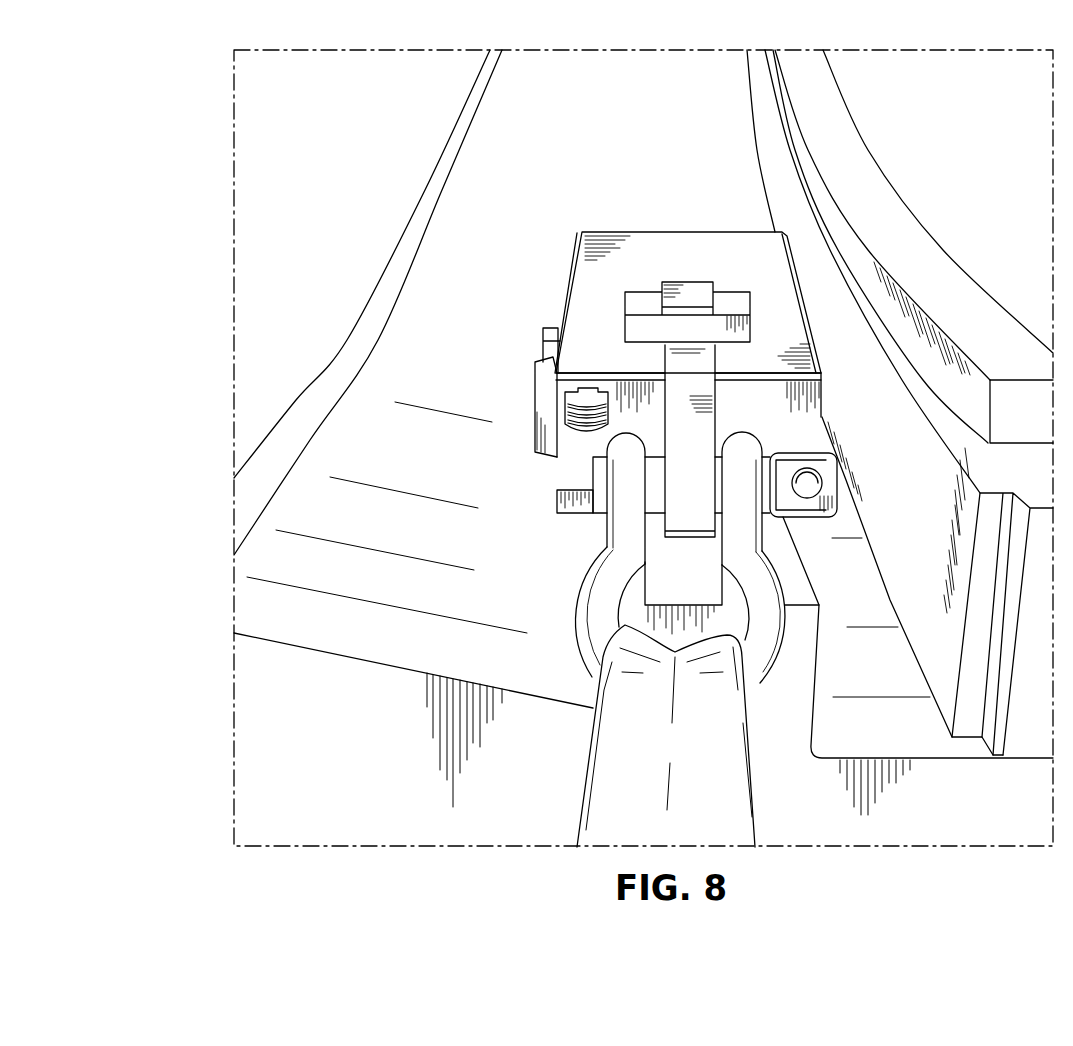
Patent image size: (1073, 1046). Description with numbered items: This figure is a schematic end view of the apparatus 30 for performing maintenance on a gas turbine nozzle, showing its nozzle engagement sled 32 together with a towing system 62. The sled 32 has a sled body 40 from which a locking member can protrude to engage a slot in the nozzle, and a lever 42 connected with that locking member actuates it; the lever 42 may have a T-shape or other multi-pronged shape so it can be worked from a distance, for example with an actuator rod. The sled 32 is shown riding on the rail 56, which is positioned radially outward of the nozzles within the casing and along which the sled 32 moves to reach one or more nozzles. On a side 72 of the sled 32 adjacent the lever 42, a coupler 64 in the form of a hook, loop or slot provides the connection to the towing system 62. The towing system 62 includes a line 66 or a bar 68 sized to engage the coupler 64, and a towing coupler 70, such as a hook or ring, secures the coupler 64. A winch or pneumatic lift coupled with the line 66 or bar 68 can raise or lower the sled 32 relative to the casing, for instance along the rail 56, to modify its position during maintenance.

The apparatus 30 is at (188, 200).
The nozzle engagement sled 32 is at (590, 285).
The sled body 40 is at (791, 312).
The lever 42 is at (567, 514).
The rail 56 is at (804, 727).
The towing system 62 is at (637, 557).
The coupler 64 is at (707, 506).
The line 66 is at (666, 736).
The bar 68 is at (711, 757).
The towing coupler 70 is at (628, 584).
The side 72 is at (774, 419).